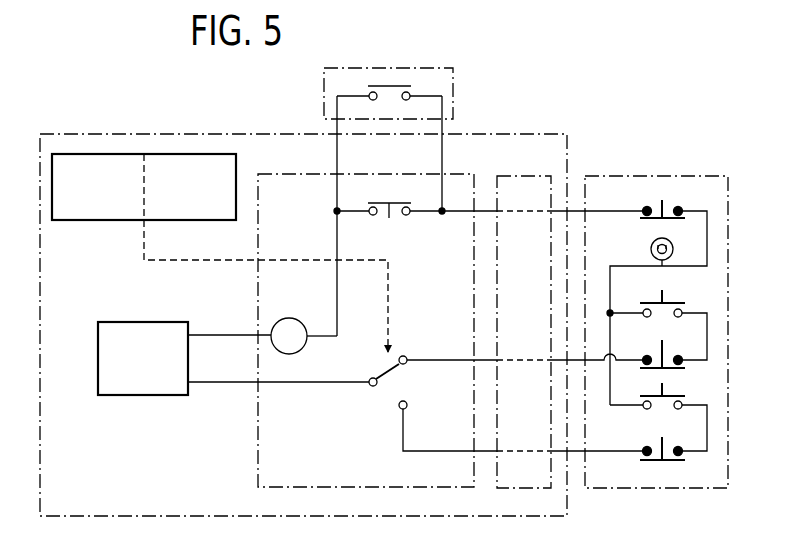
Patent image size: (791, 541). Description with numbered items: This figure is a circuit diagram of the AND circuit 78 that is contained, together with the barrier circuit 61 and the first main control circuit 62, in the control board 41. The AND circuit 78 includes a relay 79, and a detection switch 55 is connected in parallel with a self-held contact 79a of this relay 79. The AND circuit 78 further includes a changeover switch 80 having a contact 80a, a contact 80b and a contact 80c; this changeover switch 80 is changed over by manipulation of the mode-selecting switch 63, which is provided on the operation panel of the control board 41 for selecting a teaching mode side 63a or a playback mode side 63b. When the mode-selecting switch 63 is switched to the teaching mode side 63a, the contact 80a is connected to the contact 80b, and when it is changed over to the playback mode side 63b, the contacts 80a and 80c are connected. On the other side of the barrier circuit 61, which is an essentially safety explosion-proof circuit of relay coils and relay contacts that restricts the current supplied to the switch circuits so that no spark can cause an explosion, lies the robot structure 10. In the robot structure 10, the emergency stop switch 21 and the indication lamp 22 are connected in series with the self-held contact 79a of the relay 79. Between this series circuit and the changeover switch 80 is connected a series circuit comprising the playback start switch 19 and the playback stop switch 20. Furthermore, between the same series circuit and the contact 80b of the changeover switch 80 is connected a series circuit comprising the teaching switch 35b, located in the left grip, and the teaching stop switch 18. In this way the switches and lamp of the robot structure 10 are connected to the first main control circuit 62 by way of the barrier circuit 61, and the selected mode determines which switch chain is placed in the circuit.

The robot structure 10 is at (712, 172).
The teaching stop switch 18 is at (659, 448).
The playback start switch 19 is at (673, 300).
The playback stop switch 20 is at (663, 356).
The emergency stop switch 21 is at (658, 208).
The indication lamp 22 is at (649, 247).
The teaching switch 35b is at (675, 396).
The control board 41 is at (301, 128).
The detection switch 55 is at (402, 84).
The barrier circuit 61 is at (495, 186).
The first main control circuit 62 is at (148, 320).
The mode-selecting switch 63 is at (220, 223).
The teaching mode side 63a is at (105, 221).
The playback mode side 63b is at (183, 221).
The AND circuit 78 is at (257, 420).
The relay 79 is at (282, 317).
The self-held contact 79a is at (395, 226).
The changeover switch 80 is at (412, 386).
The contact 80a is at (368, 380).
The contact 80b is at (407, 408).
The contact 80c is at (405, 359).